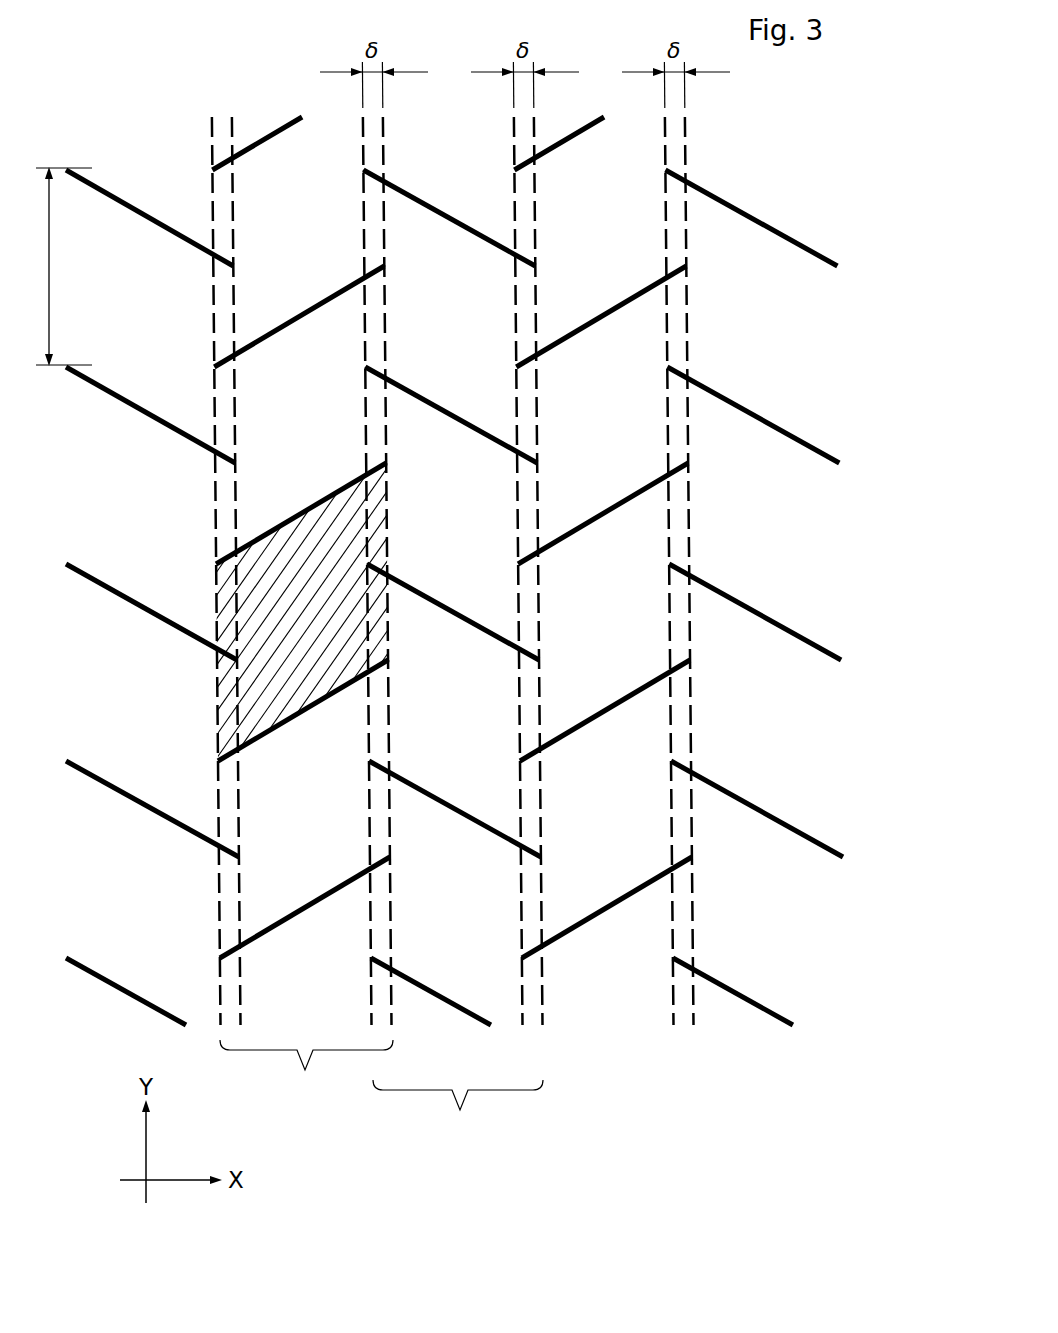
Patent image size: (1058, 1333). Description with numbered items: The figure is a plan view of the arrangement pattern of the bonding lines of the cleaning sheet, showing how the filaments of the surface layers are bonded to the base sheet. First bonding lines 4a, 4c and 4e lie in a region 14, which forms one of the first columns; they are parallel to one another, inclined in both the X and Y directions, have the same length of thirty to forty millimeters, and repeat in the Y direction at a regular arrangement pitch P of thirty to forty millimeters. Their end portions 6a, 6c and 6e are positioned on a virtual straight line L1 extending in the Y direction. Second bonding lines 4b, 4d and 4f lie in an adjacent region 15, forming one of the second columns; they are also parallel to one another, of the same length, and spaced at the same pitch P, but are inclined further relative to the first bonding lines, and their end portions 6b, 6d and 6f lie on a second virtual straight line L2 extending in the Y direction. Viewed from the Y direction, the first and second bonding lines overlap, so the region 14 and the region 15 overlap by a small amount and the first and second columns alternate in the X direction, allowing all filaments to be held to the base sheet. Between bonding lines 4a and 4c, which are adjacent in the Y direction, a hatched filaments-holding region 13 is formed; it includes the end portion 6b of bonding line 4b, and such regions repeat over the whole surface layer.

The bonding line 4a is at (302, 712).
The bonding line 4b is at (470, 620).
The bonding line 4c is at (294, 519).
The bonding line 4d is at (459, 412).
The bonding line 4e is at (291, 316).
The bonding line 4f is at (449, 214).
The end portion 6a is at (388, 661).
The end portion 6b is at (368, 563).
The end portion 6c is at (386, 465).
The end portion 6d is at (365, 368).
The end portion 6e is at (385, 265).
The end portion 6f is at (363, 171).
The filaments-holding region 13 is at (258, 612).
The region 14 is at (306, 1071).
The region 15 is at (458, 1111).
The virtual straight line L1 is at (384, 143).
The virtual straight line L2 is at (363, 143).
The arrangement pitch P is at (64, 266).